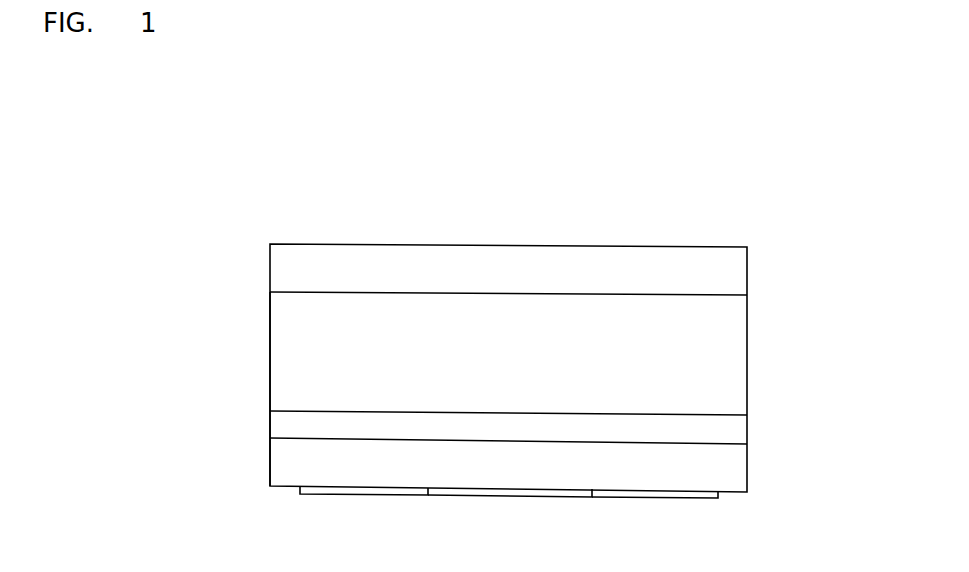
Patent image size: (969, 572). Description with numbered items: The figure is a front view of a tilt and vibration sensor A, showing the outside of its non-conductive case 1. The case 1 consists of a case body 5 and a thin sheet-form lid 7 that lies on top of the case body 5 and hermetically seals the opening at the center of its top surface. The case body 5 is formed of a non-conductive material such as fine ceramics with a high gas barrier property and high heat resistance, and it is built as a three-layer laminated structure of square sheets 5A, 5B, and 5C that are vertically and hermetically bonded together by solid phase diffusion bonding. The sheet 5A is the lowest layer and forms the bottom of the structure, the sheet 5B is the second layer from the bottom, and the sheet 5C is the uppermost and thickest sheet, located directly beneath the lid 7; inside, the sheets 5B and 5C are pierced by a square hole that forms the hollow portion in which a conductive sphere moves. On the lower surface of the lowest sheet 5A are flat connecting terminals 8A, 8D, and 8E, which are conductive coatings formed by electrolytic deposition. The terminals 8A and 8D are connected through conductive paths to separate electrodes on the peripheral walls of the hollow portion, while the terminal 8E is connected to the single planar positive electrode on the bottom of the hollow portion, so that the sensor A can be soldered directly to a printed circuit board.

The non-conductive case 1 is at (702, 245).
The tilt and vibration sensor A is at (588, 234).
The case body 5 is at (753, 382).
The lowest layer sheet 5A is at (270, 469).
The second layer sheet 5B is at (270, 424).
The uppermost layer sheet 5C is at (270, 343).
The lid 7 is at (350, 275).
The connecting terminal 8A is at (372, 495).
The connecting terminal 8D is at (655, 498).
The connecting terminal 8E is at (520, 497).